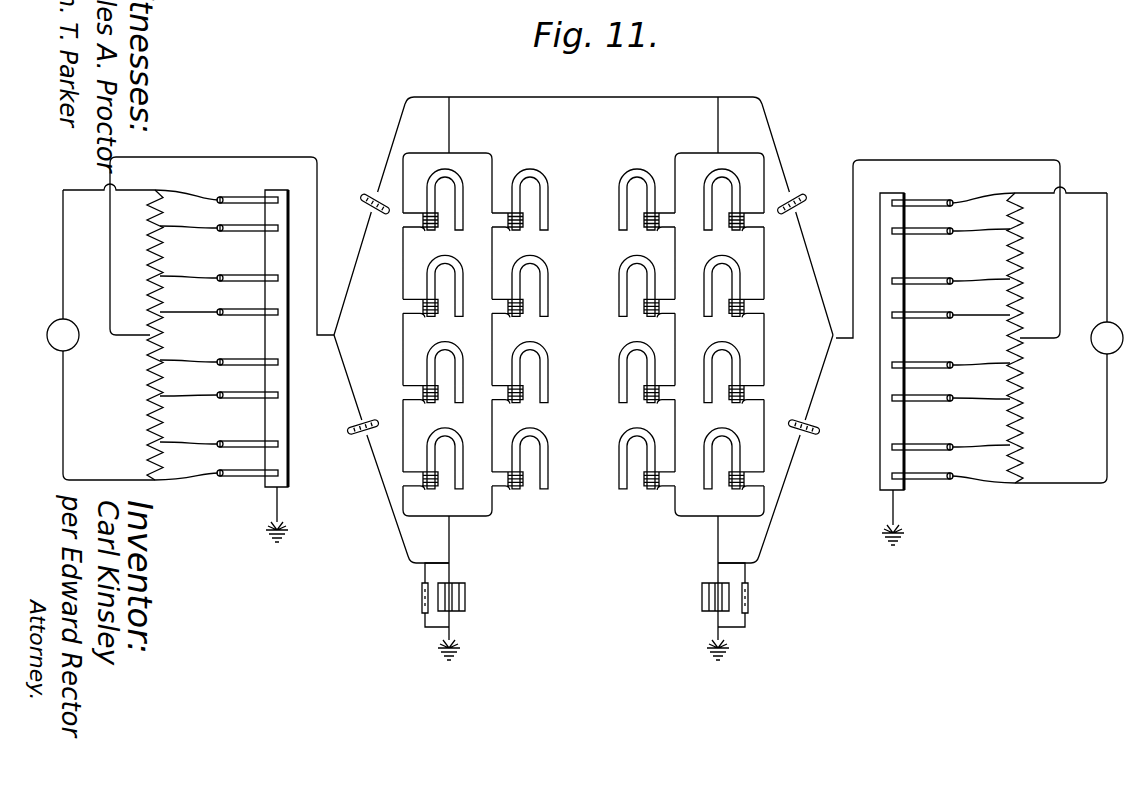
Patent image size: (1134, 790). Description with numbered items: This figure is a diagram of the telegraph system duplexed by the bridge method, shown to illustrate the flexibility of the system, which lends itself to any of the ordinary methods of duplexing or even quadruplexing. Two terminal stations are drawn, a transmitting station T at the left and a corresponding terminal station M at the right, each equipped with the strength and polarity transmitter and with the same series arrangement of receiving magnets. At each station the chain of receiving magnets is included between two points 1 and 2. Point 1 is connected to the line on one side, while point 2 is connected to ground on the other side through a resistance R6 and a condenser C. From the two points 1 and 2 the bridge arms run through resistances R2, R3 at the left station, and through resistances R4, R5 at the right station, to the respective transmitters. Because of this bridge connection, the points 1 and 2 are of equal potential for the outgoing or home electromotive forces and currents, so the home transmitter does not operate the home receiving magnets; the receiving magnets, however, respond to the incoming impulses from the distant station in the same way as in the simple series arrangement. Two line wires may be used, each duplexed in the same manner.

The point 1 is at (583, 114).
The point 2 is at (592, 539).
The resistance R2 is at (369, 219).
The resistance R3 is at (384, 449).
The resistance R4 is at (797, 219).
The resistance R5 is at (781, 449).
The resistance R6 is at (579, 595).
The condenser C is at (583, 611).
The transmitting station T is at (190, 314).
The terminal station M is at (979, 317).